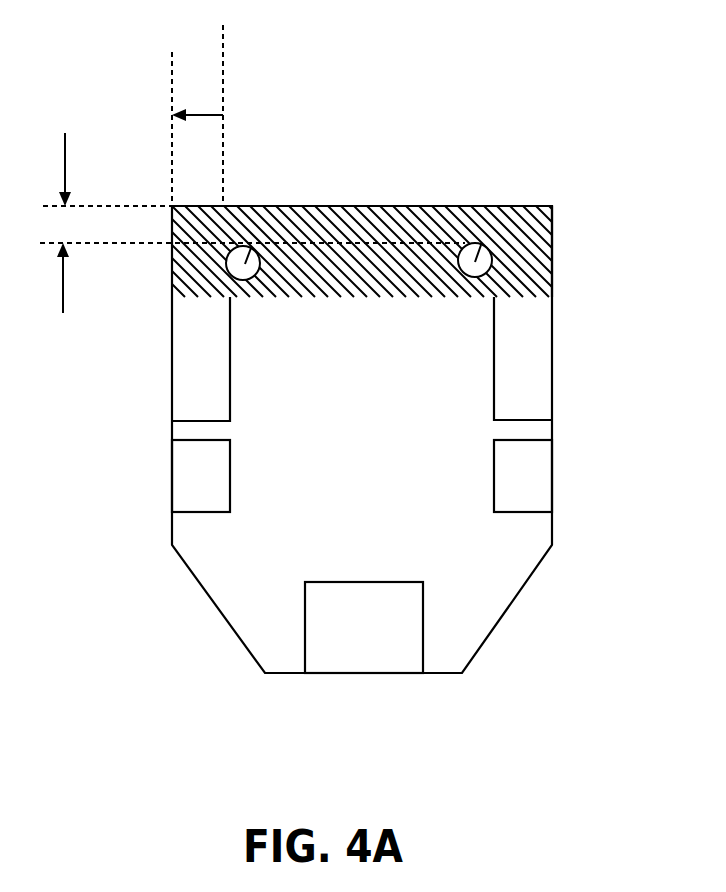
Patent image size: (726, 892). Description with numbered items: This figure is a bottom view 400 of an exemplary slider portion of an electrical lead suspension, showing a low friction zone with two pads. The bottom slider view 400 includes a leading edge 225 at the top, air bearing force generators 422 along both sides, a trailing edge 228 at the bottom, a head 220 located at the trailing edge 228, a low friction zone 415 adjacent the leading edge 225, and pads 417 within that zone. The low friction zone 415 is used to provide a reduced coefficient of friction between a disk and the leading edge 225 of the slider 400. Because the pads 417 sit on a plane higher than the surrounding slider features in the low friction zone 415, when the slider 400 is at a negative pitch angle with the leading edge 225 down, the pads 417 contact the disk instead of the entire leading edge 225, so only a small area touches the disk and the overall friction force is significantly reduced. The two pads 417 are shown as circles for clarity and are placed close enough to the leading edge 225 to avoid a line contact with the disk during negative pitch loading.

The bottom slider view 400 is at (380, 29).
The leading edge (LE) 225 is at (526, 207).
The pads 417 is at (475, 262).
The low friction zone 415 is at (600, 215).
The air bearing force (ABF) generators 422 is at (172, 377).
The head 220 is at (342, 646).
The trailing edge (TE) 228 is at (376, 673).